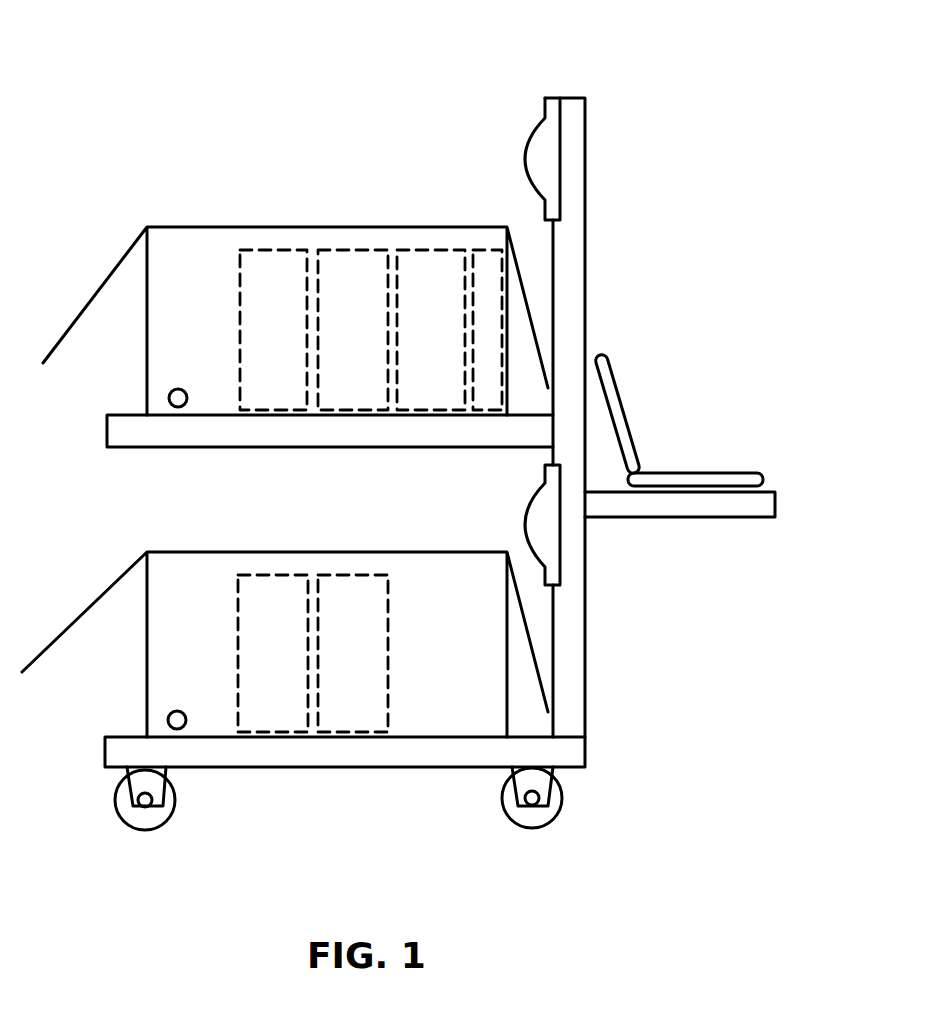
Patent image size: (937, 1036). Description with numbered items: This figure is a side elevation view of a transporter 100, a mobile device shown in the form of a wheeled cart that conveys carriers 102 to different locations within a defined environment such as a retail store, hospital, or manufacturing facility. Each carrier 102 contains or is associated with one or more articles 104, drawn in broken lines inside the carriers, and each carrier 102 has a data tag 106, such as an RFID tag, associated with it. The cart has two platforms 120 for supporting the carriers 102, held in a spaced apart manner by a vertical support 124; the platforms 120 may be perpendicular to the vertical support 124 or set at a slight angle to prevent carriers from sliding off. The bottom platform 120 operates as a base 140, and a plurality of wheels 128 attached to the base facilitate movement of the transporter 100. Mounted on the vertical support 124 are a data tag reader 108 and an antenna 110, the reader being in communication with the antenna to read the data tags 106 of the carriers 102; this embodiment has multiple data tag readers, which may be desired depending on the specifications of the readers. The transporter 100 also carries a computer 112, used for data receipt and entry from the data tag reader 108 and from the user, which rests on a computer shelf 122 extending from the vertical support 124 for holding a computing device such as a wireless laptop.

The transporter 100 is at (120, 150).
The carrier 102 is at (228, 245).
The article 104 is at (358, 265).
The data tag 106 is at (168, 398).
The data tag reader 108 is at (490, 305).
The antenna 110 is at (553, 100).
The computer 112 is at (728, 472).
The platform 120 is at (267, 435).
The computer shelf 122 is at (756, 518).
The vertical support 124 is at (576, 672).
The wheel 128 is at (553, 800).
The base 140 is at (391, 790).